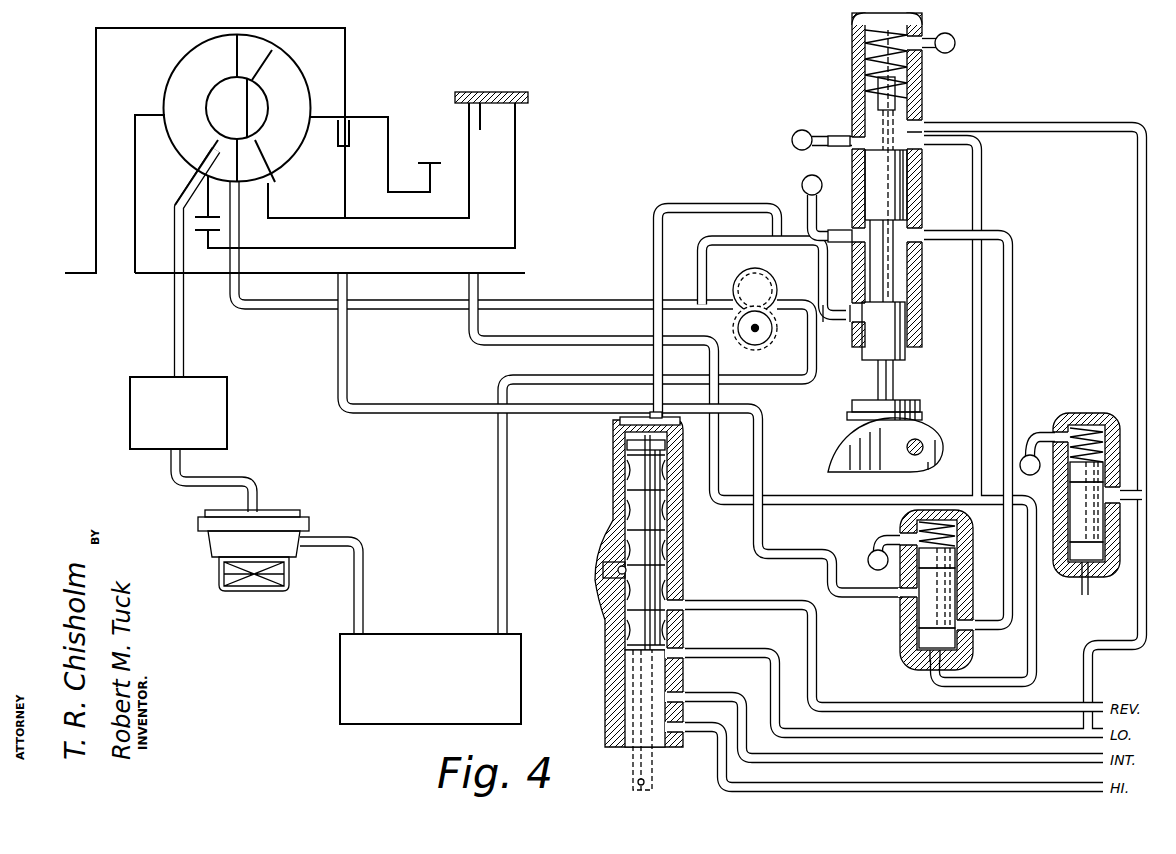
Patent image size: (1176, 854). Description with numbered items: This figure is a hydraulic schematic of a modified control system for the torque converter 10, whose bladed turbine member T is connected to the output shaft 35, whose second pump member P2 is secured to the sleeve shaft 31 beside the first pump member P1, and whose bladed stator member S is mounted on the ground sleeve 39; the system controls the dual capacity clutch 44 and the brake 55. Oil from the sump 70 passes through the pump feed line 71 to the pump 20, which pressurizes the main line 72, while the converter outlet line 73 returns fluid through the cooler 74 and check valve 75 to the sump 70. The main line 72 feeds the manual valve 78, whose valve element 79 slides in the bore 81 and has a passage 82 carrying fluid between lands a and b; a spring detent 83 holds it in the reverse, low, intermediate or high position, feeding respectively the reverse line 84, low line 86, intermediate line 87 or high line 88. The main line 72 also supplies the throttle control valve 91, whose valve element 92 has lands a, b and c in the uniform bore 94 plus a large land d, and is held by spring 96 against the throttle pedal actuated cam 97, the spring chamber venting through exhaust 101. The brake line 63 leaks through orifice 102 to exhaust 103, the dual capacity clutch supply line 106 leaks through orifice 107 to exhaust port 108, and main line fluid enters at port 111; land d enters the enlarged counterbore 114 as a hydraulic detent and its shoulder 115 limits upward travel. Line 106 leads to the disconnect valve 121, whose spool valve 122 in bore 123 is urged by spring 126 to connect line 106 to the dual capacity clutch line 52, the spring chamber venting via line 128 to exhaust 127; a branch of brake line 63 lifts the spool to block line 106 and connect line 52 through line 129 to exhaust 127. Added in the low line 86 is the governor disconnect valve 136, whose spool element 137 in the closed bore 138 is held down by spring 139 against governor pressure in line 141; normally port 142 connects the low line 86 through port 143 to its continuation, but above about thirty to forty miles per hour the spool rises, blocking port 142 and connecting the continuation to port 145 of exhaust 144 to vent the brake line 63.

The torque converter 10 is at (95, 113).
The bladed turbine member T is at (173, 113).
The first pump P1 is at (295, 97).
The second pump member P2 is at (253, 58).
The bladed stator member S is at (212, 162).
The dual capacity clutch 44 is at (347, 115).
The brake 55 is at (466, 114).
The sleeve shaft 31 is at (403, 218).
The ground sleeve 39 is at (377, 248).
The output shaft 35 is at (285, 273).
The pump 20 is at (760, 280).
The dual capacity clutch line 52 is at (830, 567).
The brake line 63 is at (491, 345).
The sump 70 is at (500, 717).
The pump feed line 71 is at (506, 474).
The main line 72 is at (422, 310).
The converter outlet line 73 is at (181, 330).
The cooler 74 is at (221, 416).
The check valve 75 is at (266, 522).
The manual valve 78 is at (610, 468).
The valve element 79 is at (665, 557).
The bore 81 is at (680, 505).
The passage 82 is at (627, 447).
The spring detent 83 is at (603, 568).
The reverse line 84 is at (717, 607).
The low line 86 is at (710, 653).
The intermediate line 87 is at (693, 691).
The high line 88 is at (717, 732).
The throttle control valve 91 is at (848, 97).
The valve element 92 is at (922, 208).
The uniform bore 94 is at (922, 90).
The spring 96 is at (857, 58).
The throttle pedal actuated cam 97 is at (927, 463).
The exhaust 101 is at (954, 37).
The orifice 102 is at (832, 137).
The exhaust 103 is at (792, 138).
The dual capacity clutch supply line 106 is at (848, 231).
The orifice 107 is at (815, 246).
The exhaust port 108 is at (802, 185).
The port 111 is at (835, 300).
The enlarged counterbore 114 is at (913, 345).
The shoulder 115 is at (920, 406).
The disconnect valve 121 is at (979, 539).
The spool valve 122 is at (917, 633).
The bore 123 is at (915, 657).
The spring 126 is at (912, 520).
The exhaust 127 is at (878, 550).
The line 128 is at (873, 538).
The line 129 is at (900, 594).
The governor disconnect valve 136 is at (1085, 413).
The spool element 137 is at (1092, 523).
The closed bore 138 is at (1080, 578).
The spring 139 is at (1100, 420).
The governor pressure line 141 is at (1087, 590).
The port 142 is at (1122, 547).
The port 143 is at (1132, 490).
The exhaust 144 is at (1040, 437).
The port 145 is at (1036, 473).
The land a is at (923, 108).
The land b is at (873, 190).
The land c is at (862, 352).
The large land d is at (852, 406).